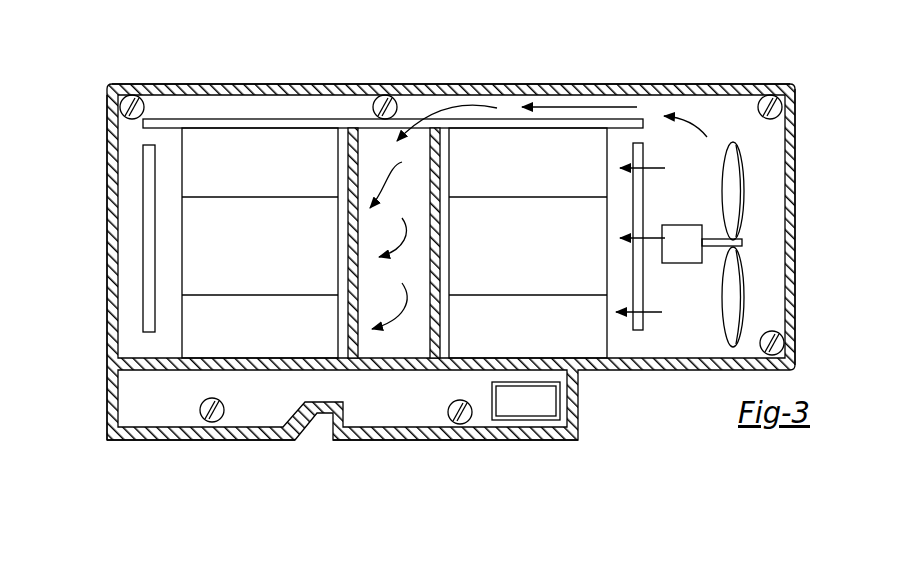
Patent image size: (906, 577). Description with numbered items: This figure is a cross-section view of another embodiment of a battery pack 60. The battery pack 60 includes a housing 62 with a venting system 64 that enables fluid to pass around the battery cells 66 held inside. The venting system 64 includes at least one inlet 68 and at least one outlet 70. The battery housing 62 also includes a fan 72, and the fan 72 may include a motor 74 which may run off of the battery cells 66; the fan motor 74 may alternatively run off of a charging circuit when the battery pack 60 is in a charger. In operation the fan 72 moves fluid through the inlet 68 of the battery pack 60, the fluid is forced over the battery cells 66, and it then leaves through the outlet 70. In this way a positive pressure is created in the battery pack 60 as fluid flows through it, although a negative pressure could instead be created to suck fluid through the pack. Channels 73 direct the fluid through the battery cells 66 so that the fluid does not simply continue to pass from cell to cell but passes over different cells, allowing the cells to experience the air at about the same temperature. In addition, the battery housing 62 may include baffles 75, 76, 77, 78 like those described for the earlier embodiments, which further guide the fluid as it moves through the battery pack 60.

The battery pack 60 is at (103, 458).
The housing 62 is at (250, 432).
The venting system 64 is at (108, 300).
The battery cells 66 is at (248, 253).
The inlet 68 is at (795, 193).
The outlet 70 is at (112, 150).
The fan 72 is at (733, 158).
The channels 73 is at (235, 108).
The motor 74 is at (672, 190).
The baffle 75 is at (640, 150).
The baffle 76 is at (447, 127).
The baffle 77 is at (352, 130).
The baffle 78 is at (150, 203).